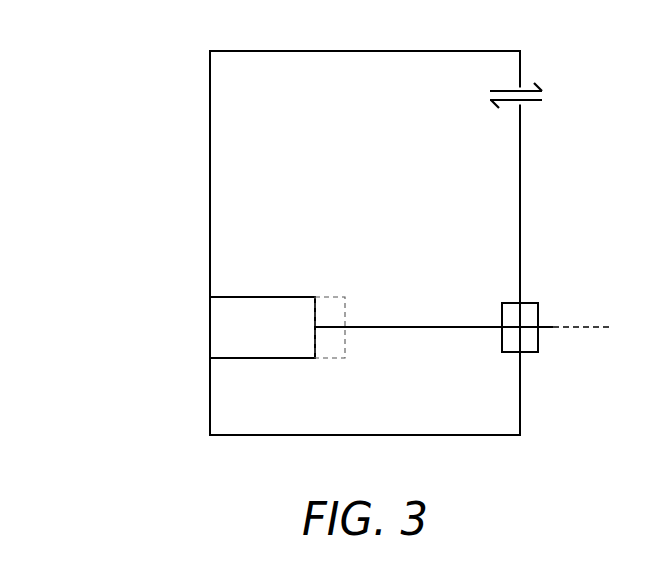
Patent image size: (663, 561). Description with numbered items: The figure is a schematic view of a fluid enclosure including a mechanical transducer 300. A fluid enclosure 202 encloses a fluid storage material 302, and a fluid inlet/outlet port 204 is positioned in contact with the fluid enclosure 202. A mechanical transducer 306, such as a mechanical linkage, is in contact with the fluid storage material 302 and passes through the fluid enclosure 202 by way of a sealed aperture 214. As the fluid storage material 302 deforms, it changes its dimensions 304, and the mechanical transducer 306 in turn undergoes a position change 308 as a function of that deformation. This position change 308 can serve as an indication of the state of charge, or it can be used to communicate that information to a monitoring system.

The mechanical transducer 300 is at (109, 108).
The fluid enclosure 202 is at (500, 51).
The fluid inlet/outlet port 204 is at (538, 87).
The fluid storage material 302 is at (262, 297).
The dimensions 304 is at (352, 268).
The mechanical transducer 306 is at (435, 324).
The sealed aperture 214 is at (532, 353).
The position change 308 is at (613, 316).